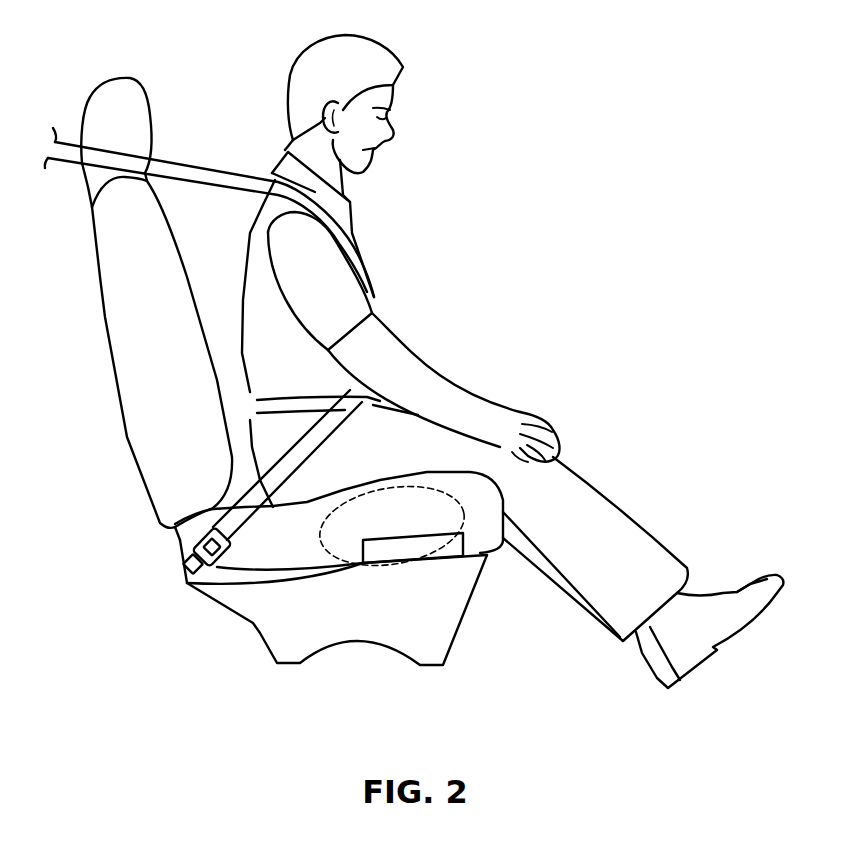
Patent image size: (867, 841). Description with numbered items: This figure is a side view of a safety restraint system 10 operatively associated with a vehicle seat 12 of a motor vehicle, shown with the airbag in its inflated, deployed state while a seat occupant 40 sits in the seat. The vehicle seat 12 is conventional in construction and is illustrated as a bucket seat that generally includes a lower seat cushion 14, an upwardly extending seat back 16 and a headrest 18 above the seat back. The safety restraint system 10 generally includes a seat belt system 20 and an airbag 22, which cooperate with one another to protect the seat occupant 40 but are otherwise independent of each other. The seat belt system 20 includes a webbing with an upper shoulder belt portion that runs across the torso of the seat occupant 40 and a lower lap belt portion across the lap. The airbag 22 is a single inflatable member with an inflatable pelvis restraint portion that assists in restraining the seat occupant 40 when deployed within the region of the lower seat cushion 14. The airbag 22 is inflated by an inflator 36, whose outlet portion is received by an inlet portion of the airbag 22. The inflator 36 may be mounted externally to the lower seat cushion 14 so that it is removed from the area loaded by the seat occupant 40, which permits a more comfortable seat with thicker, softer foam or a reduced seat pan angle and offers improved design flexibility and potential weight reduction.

The safety restraint system 10 is at (499, 468).
The vehicle seat 12 is at (103, 315).
The lower seat cushion 14 is at (497, 550).
The seat back 16 is at (137, 410).
The headrest 18 is at (110, 92).
The seat belt system 20 is at (213, 163).
The airbag 22 is at (337, 555).
The inflator 36 is at (453, 547).
The seat occupant 40 is at (350, 33).